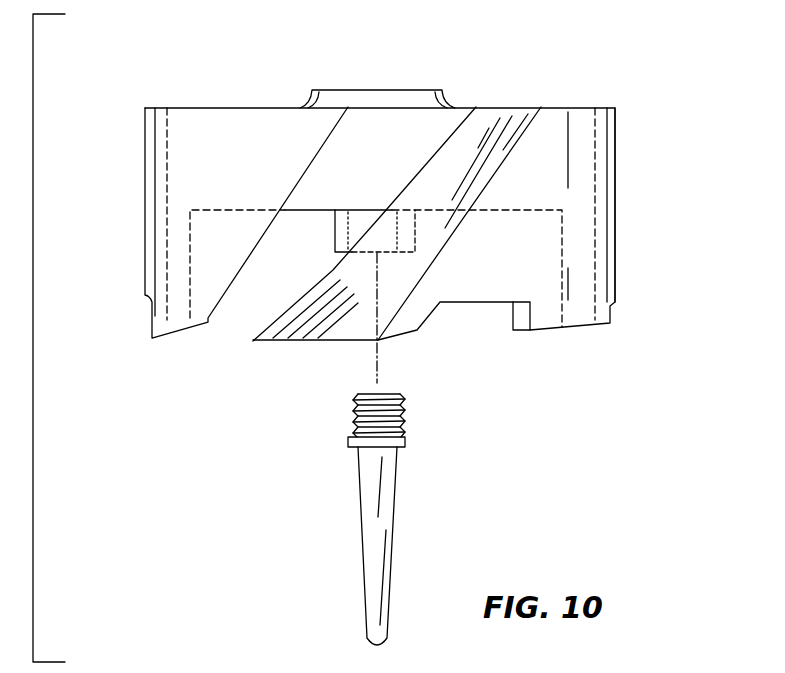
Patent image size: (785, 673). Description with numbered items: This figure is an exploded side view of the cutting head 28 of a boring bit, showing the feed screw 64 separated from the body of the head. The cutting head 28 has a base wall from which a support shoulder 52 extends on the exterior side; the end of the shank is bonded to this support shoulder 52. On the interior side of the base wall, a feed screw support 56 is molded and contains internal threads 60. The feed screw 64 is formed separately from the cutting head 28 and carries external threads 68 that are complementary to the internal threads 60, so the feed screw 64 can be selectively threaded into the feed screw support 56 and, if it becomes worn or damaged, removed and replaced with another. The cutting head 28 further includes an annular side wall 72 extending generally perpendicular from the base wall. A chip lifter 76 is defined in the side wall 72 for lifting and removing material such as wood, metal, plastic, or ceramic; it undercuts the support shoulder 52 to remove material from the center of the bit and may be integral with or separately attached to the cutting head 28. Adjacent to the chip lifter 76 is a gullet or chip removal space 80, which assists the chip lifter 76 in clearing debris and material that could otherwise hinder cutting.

The cutting head 28 is at (665, 93).
The support shoulder 52 is at (408, 90).
The feed screw support 56 is at (321, 251).
The internal threads 60 is at (342, 210).
The feed screw 64 is at (421, 534).
The external threads 68 is at (363, 423).
The annular side wall 72 is at (607, 182).
The chip lifter 76 is at (485, 117).
The chip removal space 80 is at (246, 320).